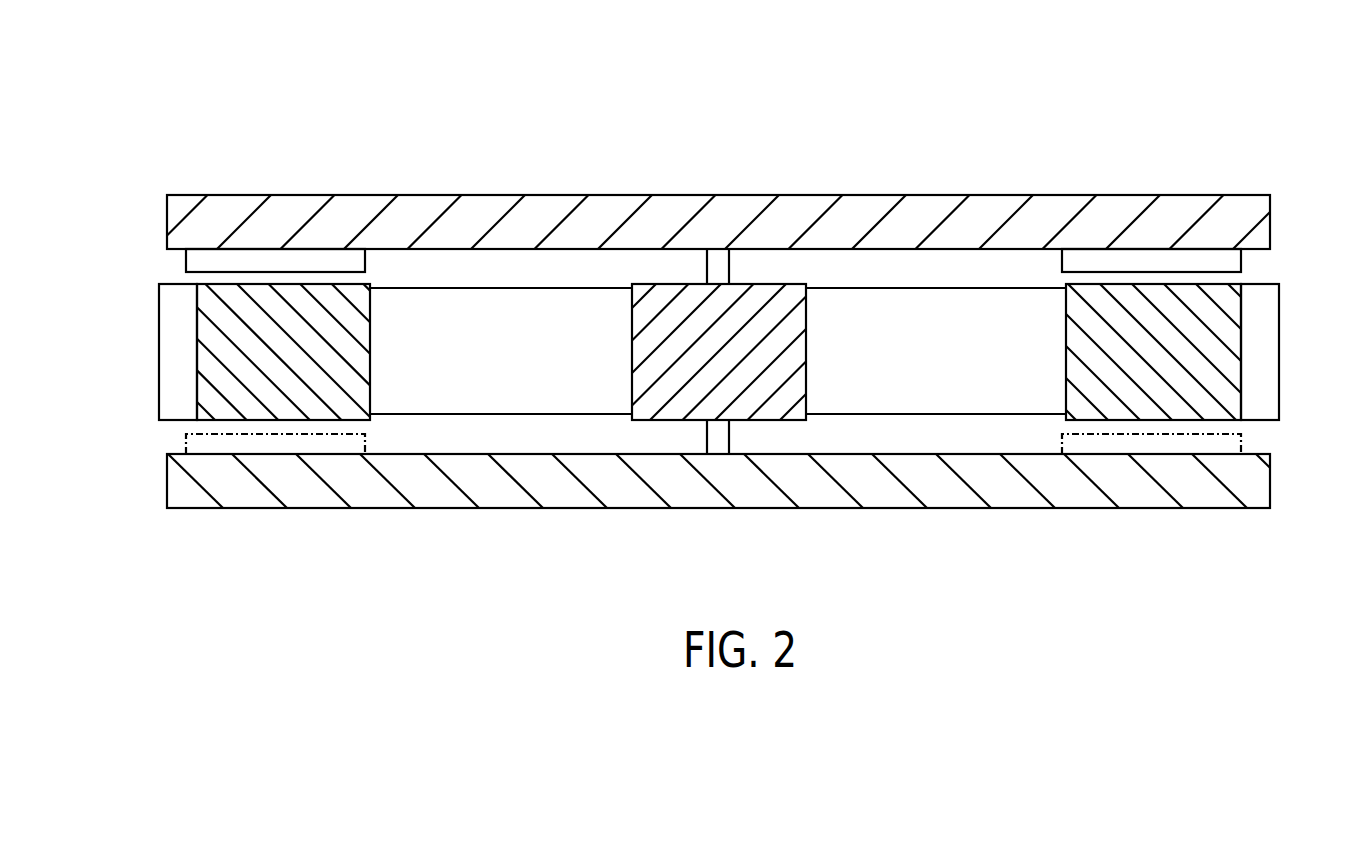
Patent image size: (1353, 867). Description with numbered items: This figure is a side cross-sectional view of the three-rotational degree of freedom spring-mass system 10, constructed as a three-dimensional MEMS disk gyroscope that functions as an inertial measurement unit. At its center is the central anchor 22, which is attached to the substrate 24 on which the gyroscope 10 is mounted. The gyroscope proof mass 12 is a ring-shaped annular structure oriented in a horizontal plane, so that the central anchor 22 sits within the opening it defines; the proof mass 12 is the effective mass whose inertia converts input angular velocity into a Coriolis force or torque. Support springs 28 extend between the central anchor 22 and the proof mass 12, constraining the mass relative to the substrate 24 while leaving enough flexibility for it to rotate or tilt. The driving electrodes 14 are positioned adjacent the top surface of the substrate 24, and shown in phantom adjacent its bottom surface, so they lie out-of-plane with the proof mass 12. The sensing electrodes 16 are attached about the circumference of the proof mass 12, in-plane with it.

The three-rotational degree of freedom spring-mass system 10 is at (1198, 72).
The gyroscope proof mass 12 is at (370, 395).
The driving electrodes 14 is at (186, 262).
The sensing electrodes 16 is at (168, 355).
The central anchor 22 is at (763, 290).
The substrate 24 is at (982, 205).
The support springs 28 is at (512, 400).